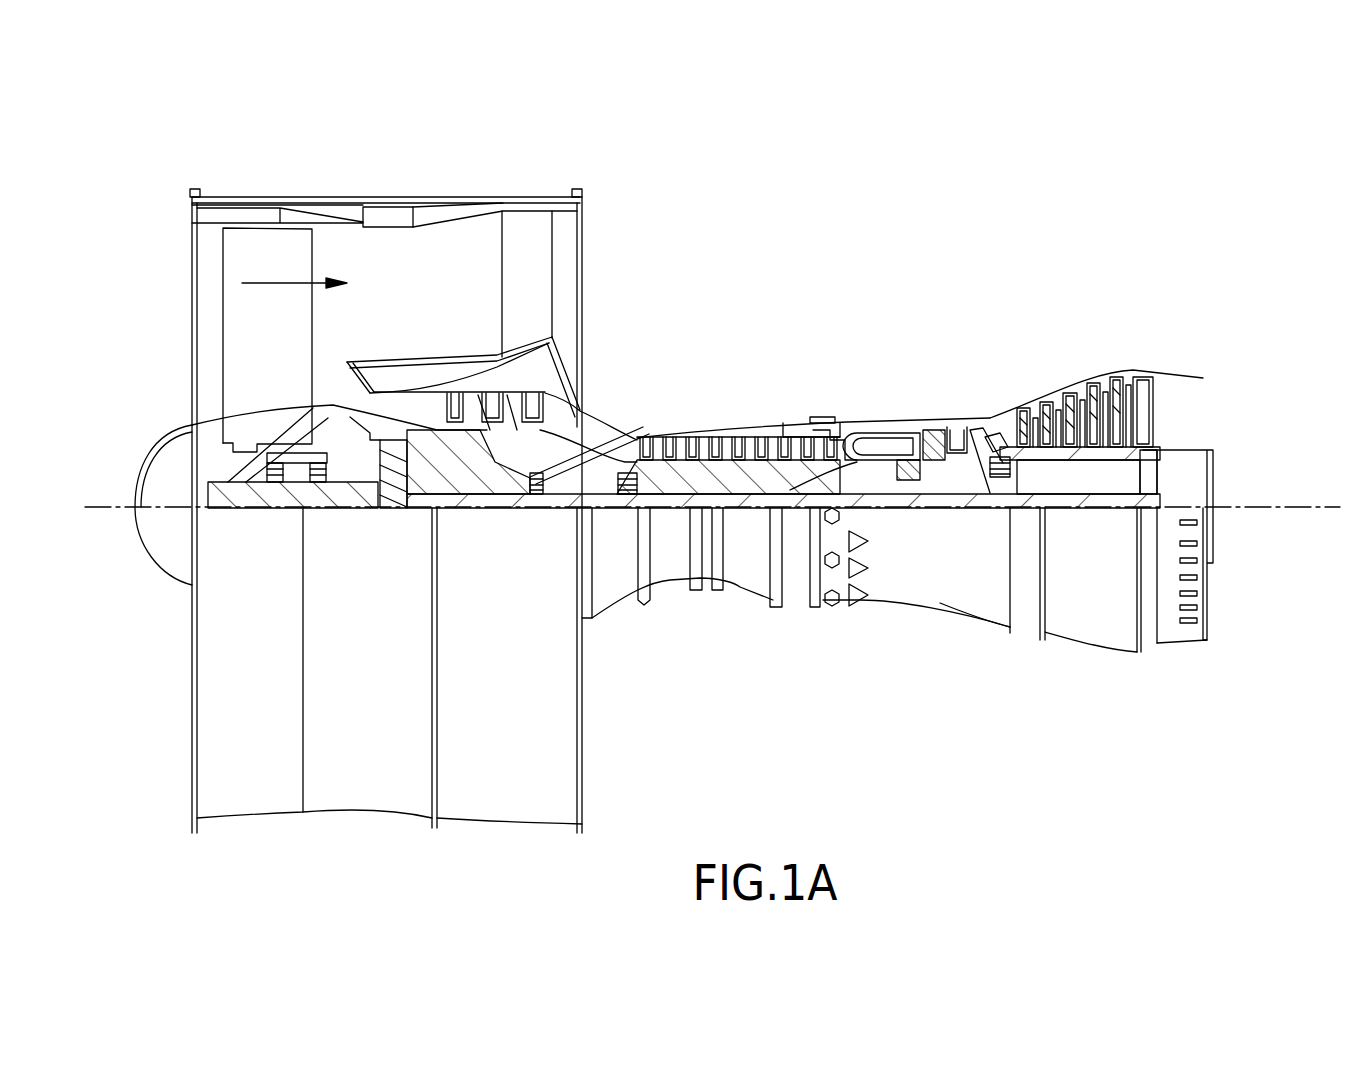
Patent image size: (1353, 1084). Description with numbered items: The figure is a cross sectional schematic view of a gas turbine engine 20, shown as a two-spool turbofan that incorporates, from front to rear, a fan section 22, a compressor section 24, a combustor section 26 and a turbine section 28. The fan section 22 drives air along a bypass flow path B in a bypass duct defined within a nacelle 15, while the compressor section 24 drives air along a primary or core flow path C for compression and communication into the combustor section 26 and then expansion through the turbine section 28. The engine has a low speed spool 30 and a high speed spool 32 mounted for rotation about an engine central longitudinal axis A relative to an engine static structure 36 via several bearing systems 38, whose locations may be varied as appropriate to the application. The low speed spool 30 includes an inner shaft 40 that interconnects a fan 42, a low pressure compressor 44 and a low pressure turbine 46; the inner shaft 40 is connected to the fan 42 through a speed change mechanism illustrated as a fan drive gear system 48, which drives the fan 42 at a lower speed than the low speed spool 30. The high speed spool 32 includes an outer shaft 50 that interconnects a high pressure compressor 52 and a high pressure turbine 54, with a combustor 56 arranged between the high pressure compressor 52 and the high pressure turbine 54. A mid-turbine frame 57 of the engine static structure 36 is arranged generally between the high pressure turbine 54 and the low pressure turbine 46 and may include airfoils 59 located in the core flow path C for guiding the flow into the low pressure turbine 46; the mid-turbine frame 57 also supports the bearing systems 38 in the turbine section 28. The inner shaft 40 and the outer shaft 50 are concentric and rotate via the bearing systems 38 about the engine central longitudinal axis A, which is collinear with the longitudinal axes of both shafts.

The nacelle 15 is at (380, 212).
The gas turbine engine 20 is at (902, 217).
The fan section 22 is at (303, 188).
The compressor section 24 is at (628, 398).
The combustor section 26 is at (867, 390).
The turbine section 28 is at (1028, 356).
The low speed spool 30 is at (750, 510).
The high speed spool 32 is at (805, 460).
The engine static structure 36 is at (797, 580).
The bearing systems 38 is at (538, 497).
The inner shaft 40 is at (604, 508).
The fan 42 is at (252, 322).
The low pressure compressor 44 is at (510, 402).
The low pressure turbine 46 is at (1077, 393).
The fan drive gear system 48 is at (395, 497).
The outer shaft 50 is at (857, 491).
The high pressure compressor 52 is at (750, 442).
The high pressure turbine 54 is at (940, 427).
The combustor 56 is at (883, 443).
The mid-turbine frame 57 is at (990, 410).
The airfoils 59 is at (990, 437).
The engine central longitudinal axis A is at (1263, 505).
The bypass flow path B is at (277, 283).
The core flow path C is at (370, 393).